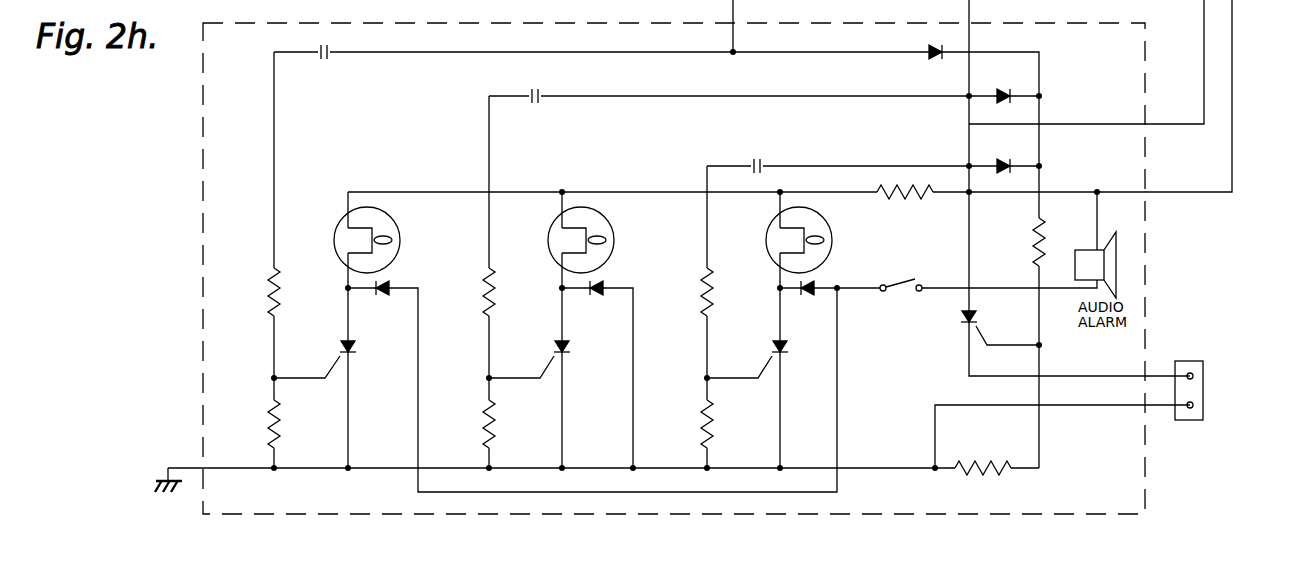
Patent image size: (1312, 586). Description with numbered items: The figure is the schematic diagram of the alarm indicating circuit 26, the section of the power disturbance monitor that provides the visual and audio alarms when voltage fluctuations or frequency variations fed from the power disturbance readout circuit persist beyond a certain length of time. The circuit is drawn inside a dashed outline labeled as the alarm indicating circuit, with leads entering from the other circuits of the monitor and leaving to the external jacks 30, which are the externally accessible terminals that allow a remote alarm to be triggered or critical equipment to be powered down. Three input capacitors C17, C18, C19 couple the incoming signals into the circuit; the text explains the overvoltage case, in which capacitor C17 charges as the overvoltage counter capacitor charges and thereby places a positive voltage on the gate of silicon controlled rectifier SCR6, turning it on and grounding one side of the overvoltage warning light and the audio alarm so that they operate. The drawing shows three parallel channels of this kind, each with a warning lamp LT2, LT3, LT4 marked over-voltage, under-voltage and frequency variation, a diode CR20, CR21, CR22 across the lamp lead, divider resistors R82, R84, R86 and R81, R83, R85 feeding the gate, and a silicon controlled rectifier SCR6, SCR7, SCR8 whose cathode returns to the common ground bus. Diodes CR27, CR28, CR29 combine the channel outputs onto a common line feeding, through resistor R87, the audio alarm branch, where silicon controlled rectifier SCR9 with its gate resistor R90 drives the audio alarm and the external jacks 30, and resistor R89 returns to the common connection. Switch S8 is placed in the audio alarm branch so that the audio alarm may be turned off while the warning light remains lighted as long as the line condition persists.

The alarm indicating circuit 26 is at (203, 262).
The external jacks 30 is at (1188, 361).
The capacitor C17 is at (322, 67).
The capacitor C18 is at (536, 111).
The capacitor C19 is at (756, 150).
The diode CR20 is at (378, 295).
The diode CR21 is at (594, 295).
The diode CR22 is at (806, 295).
The diode CR27 is at (926, 60).
The diode CR28 is at (995, 88).
The diode CR29 is at (995, 158).
The resistor R81 is at (256, 424).
The resistor R82 is at (256, 292).
The resistor R83 is at (471, 424).
The resistor R84 is at (471, 292).
The resistor R85 is at (687, 424).
The resistor R86 is at (687, 292).
The resistor R87 is at (905, 215).
The resistor R89 is at (983, 451).
The resistor R90 is at (1016, 242).
The over-voltage lamp LT2 is at (399, 240).
The under-voltage lamp LT3 is at (613, 240).
The frequency variation lamp LT4 is at (837, 240).
The silicon controlled rectifier SCR6 is at (367, 349).
The silicon controlled rectifier SCR7 is at (581, 349).
The silicon controlled rectifier SCR8 is at (799, 349).
The silicon controlled rectifier SCR9 is at (988, 320).
The switch S8 is at (879, 294).